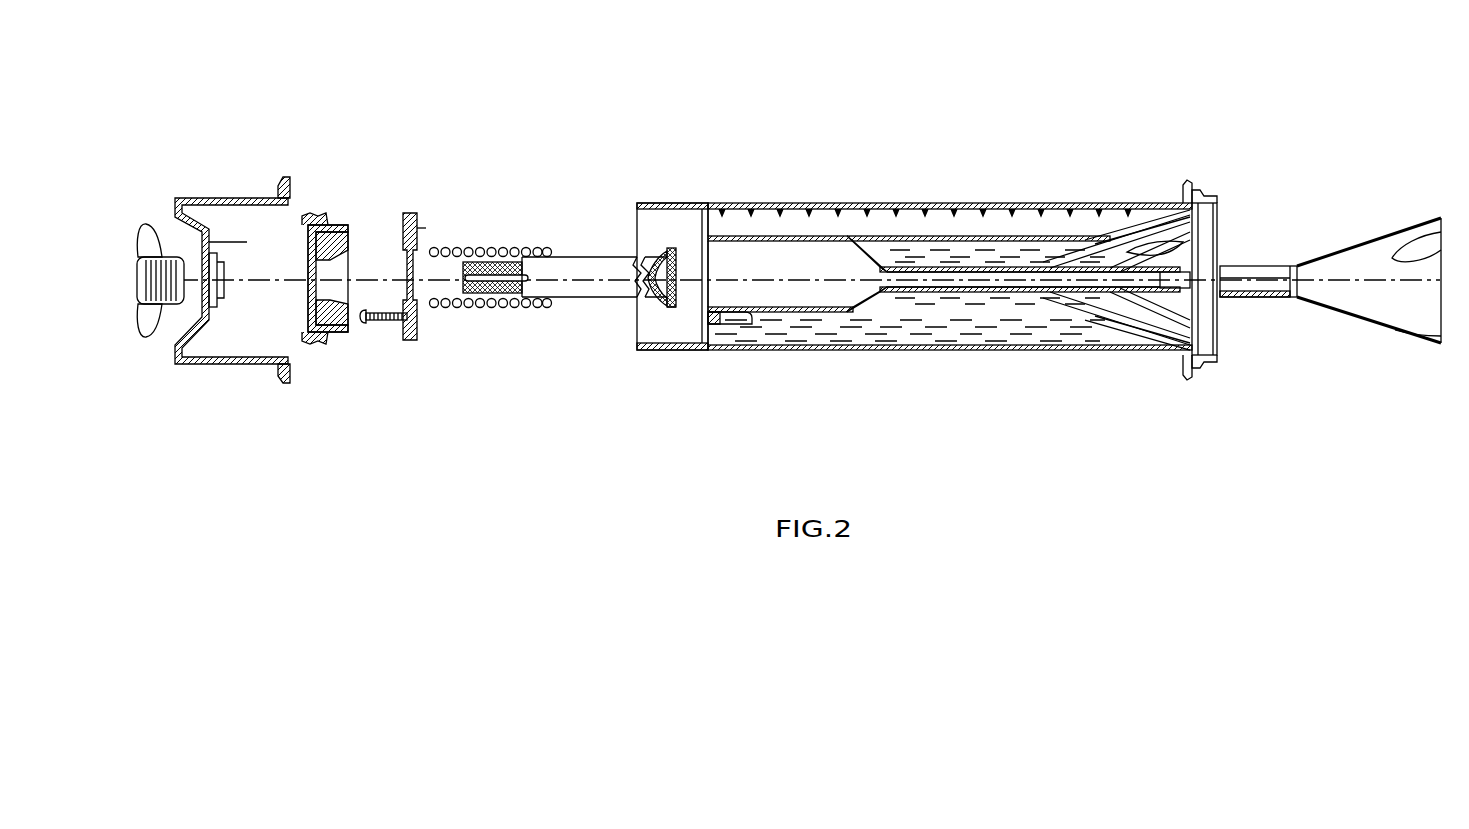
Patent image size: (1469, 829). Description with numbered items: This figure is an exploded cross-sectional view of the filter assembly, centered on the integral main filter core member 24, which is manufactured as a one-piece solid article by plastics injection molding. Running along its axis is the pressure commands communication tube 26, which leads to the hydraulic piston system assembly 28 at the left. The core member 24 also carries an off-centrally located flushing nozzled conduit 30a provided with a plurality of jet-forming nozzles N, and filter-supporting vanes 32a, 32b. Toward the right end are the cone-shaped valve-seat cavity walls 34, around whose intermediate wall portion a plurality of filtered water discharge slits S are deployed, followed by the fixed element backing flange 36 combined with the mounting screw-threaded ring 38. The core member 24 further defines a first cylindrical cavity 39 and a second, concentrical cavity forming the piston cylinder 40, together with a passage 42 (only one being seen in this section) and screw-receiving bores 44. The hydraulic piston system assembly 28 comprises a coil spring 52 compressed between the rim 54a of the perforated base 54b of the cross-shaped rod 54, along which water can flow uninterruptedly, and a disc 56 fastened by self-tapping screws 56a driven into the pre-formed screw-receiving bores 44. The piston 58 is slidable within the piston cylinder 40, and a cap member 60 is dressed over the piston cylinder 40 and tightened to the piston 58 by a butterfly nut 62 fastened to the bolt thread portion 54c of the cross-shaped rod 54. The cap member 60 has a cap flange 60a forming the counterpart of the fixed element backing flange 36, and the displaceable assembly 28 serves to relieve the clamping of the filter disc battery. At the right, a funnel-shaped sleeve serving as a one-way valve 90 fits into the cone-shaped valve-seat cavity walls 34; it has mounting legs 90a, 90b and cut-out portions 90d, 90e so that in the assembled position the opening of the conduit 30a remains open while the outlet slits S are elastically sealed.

The integral main filter core member 24 is at (914, 120).
The pressure commands communication tube 26 is at (950, 330).
The hydraulic piston system assembly 28 is at (261, 147).
The flushing nozzled conduit 30a is at (1085, 204).
The filter-supporting vane 32a is at (935, 250).
The filter-supporting vane 32b is at (1075, 346).
The cone-shaped valve-seat cavity walls 34 is at (1050, 262).
The fixed element backing flange 36 is at (1178, 198).
The mounting screw-threaded ring 38 is at (1200, 200).
The first cylindrical cavity 39 is at (815, 300).
The piston cylinder 40 is at (637, 222).
The passage 42 is at (993, 330).
The screw-receiving bore 44 is at (725, 326).
The coil spring 52 is at (507, 306).
The cross-shaped rod 54 is at (556, 257).
The rim 54a is at (672, 310).
The perforated base 54b is at (650, 343).
The bolt thread portion 54c is at (470, 303).
The disc 56 is at (404, 212).
The self-tapping screw 56a is at (390, 333).
The piston 58 is at (342, 212).
The cap member 60 is at (228, 365).
The cap flange 60a is at (280, 366).
The butterfly nut 62 is at (152, 338).
The one-way valve 90 is at (1345, 250).
The mounting leg 90a is at (1278, 300).
The mounting leg 90b is at (1245, 272).
The cut-out portion 90d is at (1420, 252).
The cut-out portion 90e is at (1428, 343).
The jet-forming nozzle N is at (782, 210).
The filtered water discharge slit S is at (1155, 240).